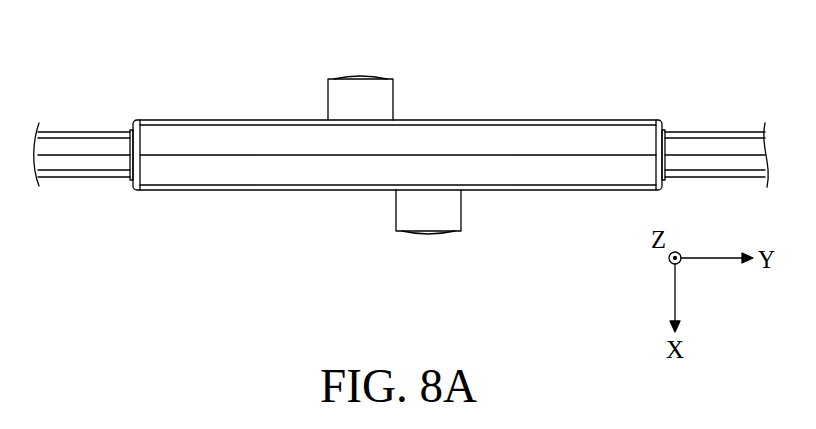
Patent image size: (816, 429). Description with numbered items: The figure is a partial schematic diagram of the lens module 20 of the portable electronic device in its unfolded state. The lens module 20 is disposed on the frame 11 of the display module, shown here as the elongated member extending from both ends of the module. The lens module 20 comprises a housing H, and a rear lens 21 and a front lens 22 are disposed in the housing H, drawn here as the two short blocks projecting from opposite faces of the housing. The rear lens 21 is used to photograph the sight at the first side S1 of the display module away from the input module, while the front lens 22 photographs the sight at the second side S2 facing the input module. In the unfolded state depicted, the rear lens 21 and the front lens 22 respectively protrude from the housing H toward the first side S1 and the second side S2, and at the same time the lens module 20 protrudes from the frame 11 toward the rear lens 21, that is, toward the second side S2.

The lens module 20 is at (583, 107).
The rear lens 21 is at (361, 77).
The front lens 22 is at (428, 237).
The frame 11 is at (729, 145).
The first side S1 is at (97, 108).
The second side S2 is at (97, 203).
The housing H is at (268, 118).